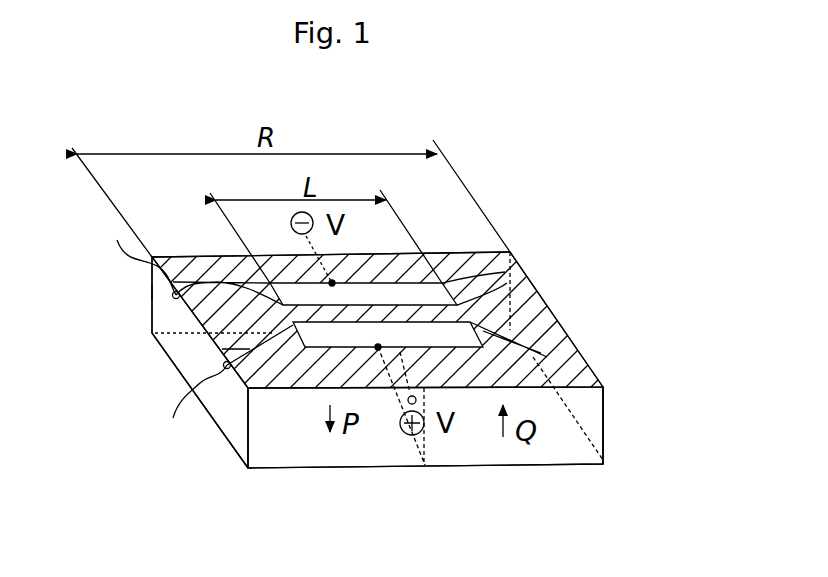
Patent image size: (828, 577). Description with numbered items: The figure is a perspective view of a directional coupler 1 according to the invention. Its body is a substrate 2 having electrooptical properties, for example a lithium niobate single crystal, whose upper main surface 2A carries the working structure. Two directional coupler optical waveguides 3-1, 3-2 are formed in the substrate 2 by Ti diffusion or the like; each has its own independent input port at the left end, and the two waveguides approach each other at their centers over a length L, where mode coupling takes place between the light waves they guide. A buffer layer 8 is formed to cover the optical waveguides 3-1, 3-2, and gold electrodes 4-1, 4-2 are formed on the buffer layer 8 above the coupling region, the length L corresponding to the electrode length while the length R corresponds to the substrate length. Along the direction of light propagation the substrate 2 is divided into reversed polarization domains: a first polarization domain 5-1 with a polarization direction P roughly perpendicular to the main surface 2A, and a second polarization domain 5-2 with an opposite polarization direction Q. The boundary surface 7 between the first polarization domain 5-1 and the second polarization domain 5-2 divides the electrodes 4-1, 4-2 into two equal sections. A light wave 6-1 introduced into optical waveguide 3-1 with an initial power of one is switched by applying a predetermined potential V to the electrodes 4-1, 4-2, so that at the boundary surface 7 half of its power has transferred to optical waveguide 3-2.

The directional coupler 1 is at (550, 245).
The substrate 2 is at (165, 313).
The main surface 2A is at (537, 322).
The optical waveguide 3-1 is at (200, 283).
The optical waveguide 3-2 is at (200, 383).
The electrode 4-1 is at (403, 250).
The electrode 4-2 is at (447, 338).
The first polarization domain 5-1 is at (278, 453).
The second polarization domain 5-2 is at (570, 440).
The light wave 6-1 is at (163, 292).
The boundary surface 7 is at (417, 440).
The buffer layer 8 is at (573, 370).